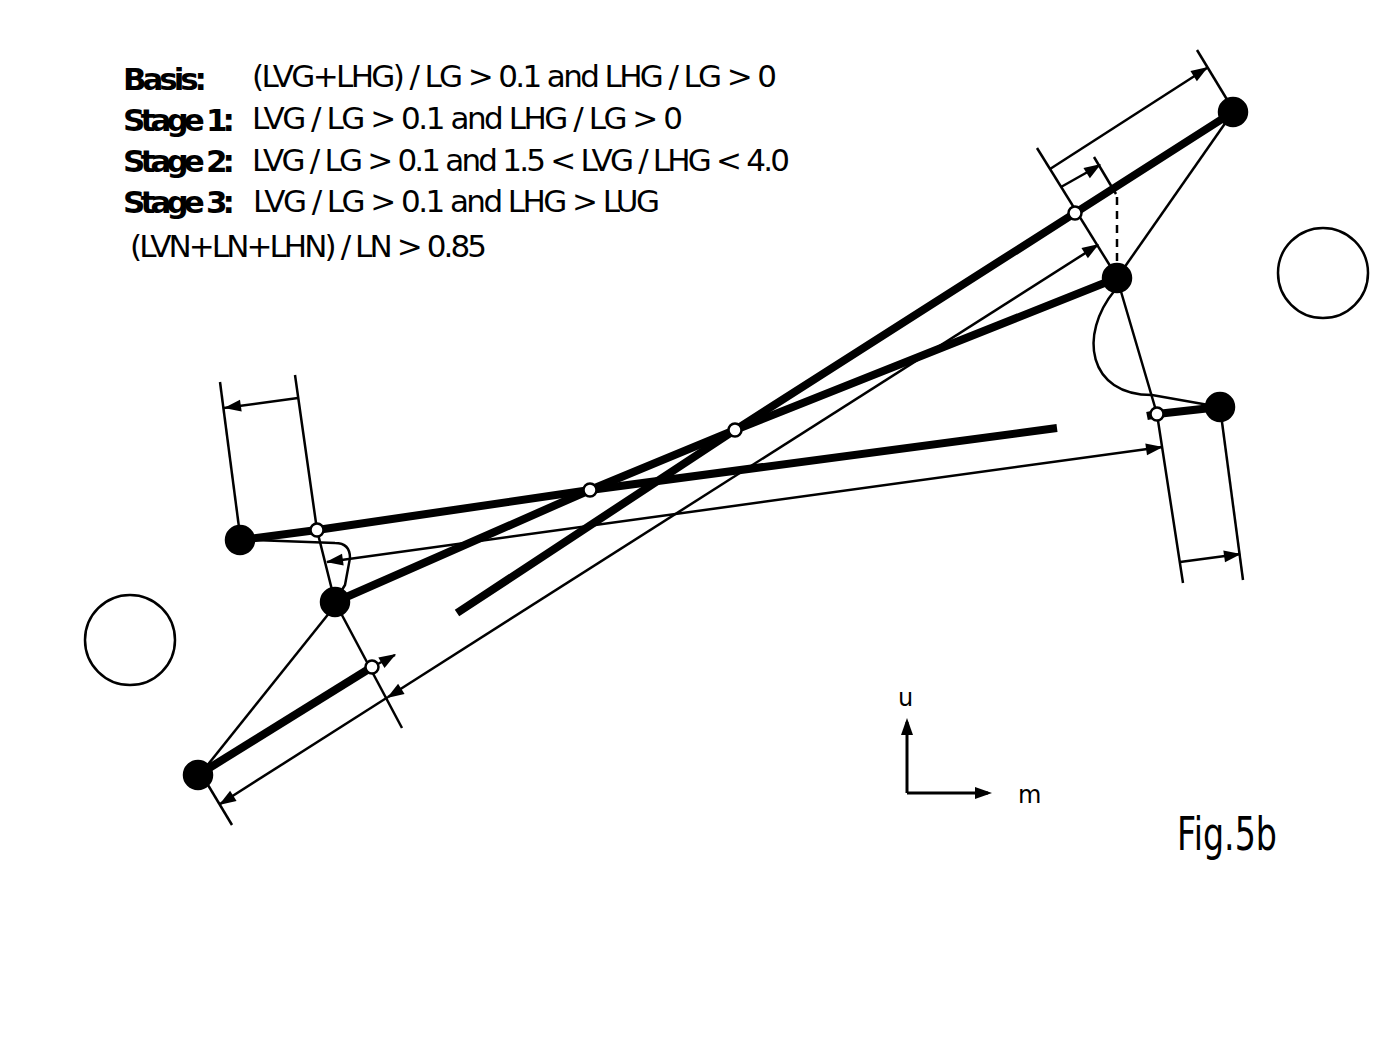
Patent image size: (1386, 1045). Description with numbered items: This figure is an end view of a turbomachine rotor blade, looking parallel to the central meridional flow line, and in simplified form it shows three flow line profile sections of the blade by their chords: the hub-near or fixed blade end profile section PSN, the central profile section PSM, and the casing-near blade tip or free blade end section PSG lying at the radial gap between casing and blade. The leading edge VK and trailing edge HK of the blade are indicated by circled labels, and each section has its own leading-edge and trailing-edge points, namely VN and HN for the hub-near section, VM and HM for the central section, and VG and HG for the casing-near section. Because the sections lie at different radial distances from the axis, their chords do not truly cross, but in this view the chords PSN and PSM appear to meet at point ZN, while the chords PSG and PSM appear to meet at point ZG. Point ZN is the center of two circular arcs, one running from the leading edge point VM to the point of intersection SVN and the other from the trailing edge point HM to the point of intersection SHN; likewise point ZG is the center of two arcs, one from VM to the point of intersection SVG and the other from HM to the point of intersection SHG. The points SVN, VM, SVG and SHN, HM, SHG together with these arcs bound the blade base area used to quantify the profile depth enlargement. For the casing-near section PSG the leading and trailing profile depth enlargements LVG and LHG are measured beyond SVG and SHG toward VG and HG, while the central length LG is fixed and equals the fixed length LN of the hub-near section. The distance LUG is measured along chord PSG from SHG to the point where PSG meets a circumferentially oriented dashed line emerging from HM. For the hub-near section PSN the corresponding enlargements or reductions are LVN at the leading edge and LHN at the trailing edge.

The leading-edge point of hub-near profile section VN is at (215, 540).
The leading-edge point of central profile section VM is at (311, 602).
The leading-edge point of casing-near profile section VG is at (176, 776).
The trailing-edge point of casing-near profile section HG is at (1259, 114).
The trailing-edge point of central profile section HM is at (1143, 281).
The trailing-edge point of hub-near profile section HN is at (1244, 409).
The point of intersection SVN is at (344, 508).
The point of intersection SVG is at (400, 648).
The point of intersection SHG is at (1037, 214).
The point of intersection SHN is at (1118, 423).
The apparent intersection point of chords PSN and PSM ZN is at (591, 471).
The apparent intersection point of chords PSG and PSM ZG is at (726, 411).
The casing-near profile section PSG is at (784, 357).
The central profile section PSM is at (657, 526).
The hub-near profile section PSN is at (730, 468).
The profile depth enlargement at hub-near leading edge LVN is at (247, 366).
The profile depth enlargement at casing-near leading edge LVG is at (302, 760).
The central length LG is at (743, 471).
The fixed length LN is at (744, 504).
The profile depth enlargement at casing-near trailing edge LHG is at (1130, 111).
The distance along casing-near chord LUG is at (1065, 181).
The profile depth enlargement at hub-near trailing edge LHN is at (1218, 597).
The leading edge VK is at (262, 696).
The trailing edge HK is at (1173, 200).